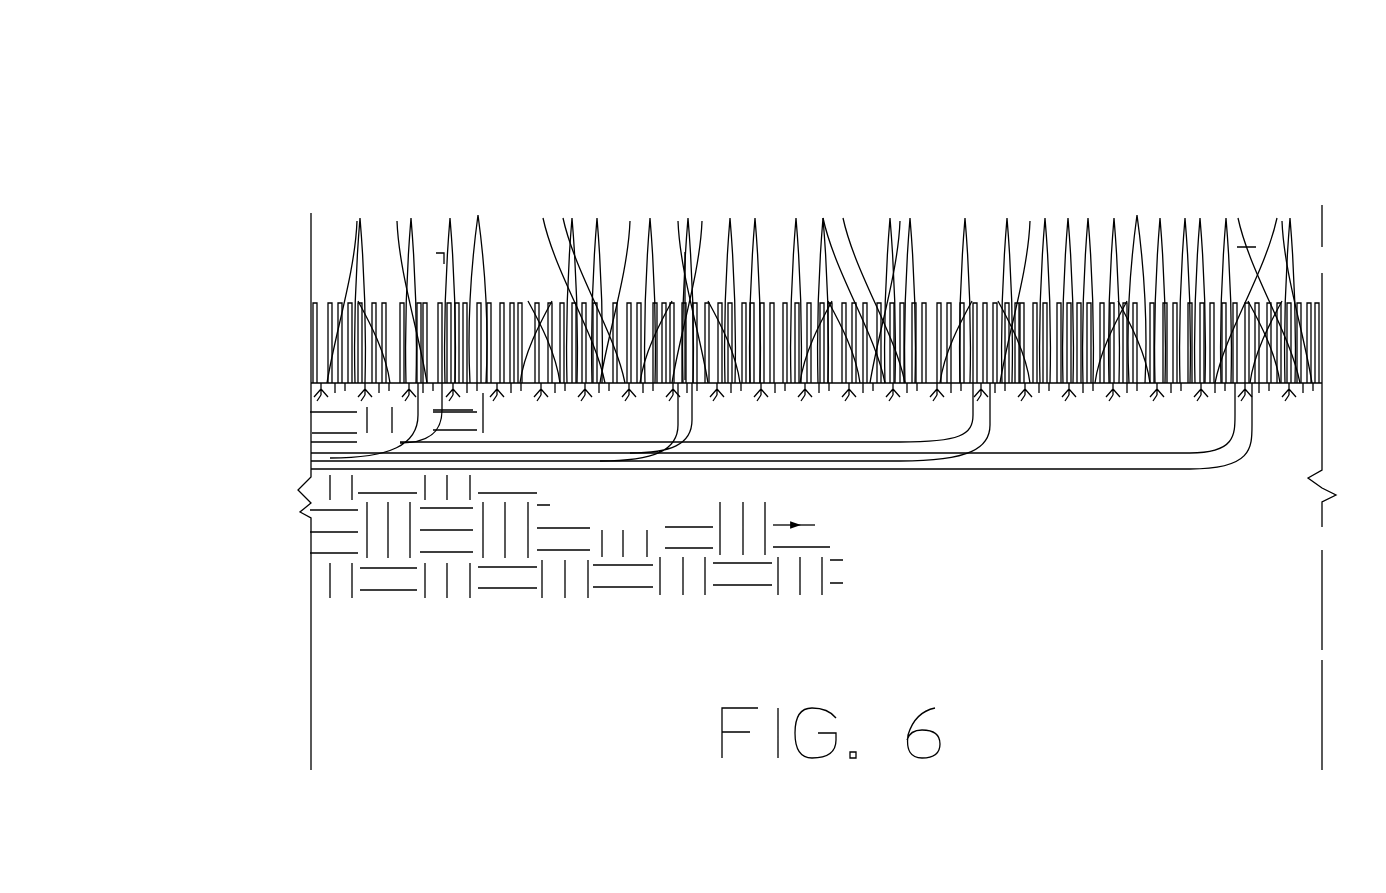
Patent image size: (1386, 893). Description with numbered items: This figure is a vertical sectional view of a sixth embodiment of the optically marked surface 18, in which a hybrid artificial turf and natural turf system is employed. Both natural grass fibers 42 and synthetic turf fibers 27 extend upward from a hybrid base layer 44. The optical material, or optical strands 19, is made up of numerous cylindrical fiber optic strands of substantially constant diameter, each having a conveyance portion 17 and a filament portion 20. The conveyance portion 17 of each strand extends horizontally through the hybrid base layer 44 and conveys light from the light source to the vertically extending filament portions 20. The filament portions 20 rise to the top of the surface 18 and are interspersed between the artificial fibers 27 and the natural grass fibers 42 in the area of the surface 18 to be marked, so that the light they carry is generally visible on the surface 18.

The surface 18 is at (1027, 123).
The filament portion 20 is at (436, 247).
The synthetic turf fibers 27 is at (463, 291).
The natural grass fibers 42 is at (543, 249).
The optical material 19 is at (432, 425).
The hybrid base layer 44 is at (328, 425).
The conveyance portion 17 is at (352, 449).